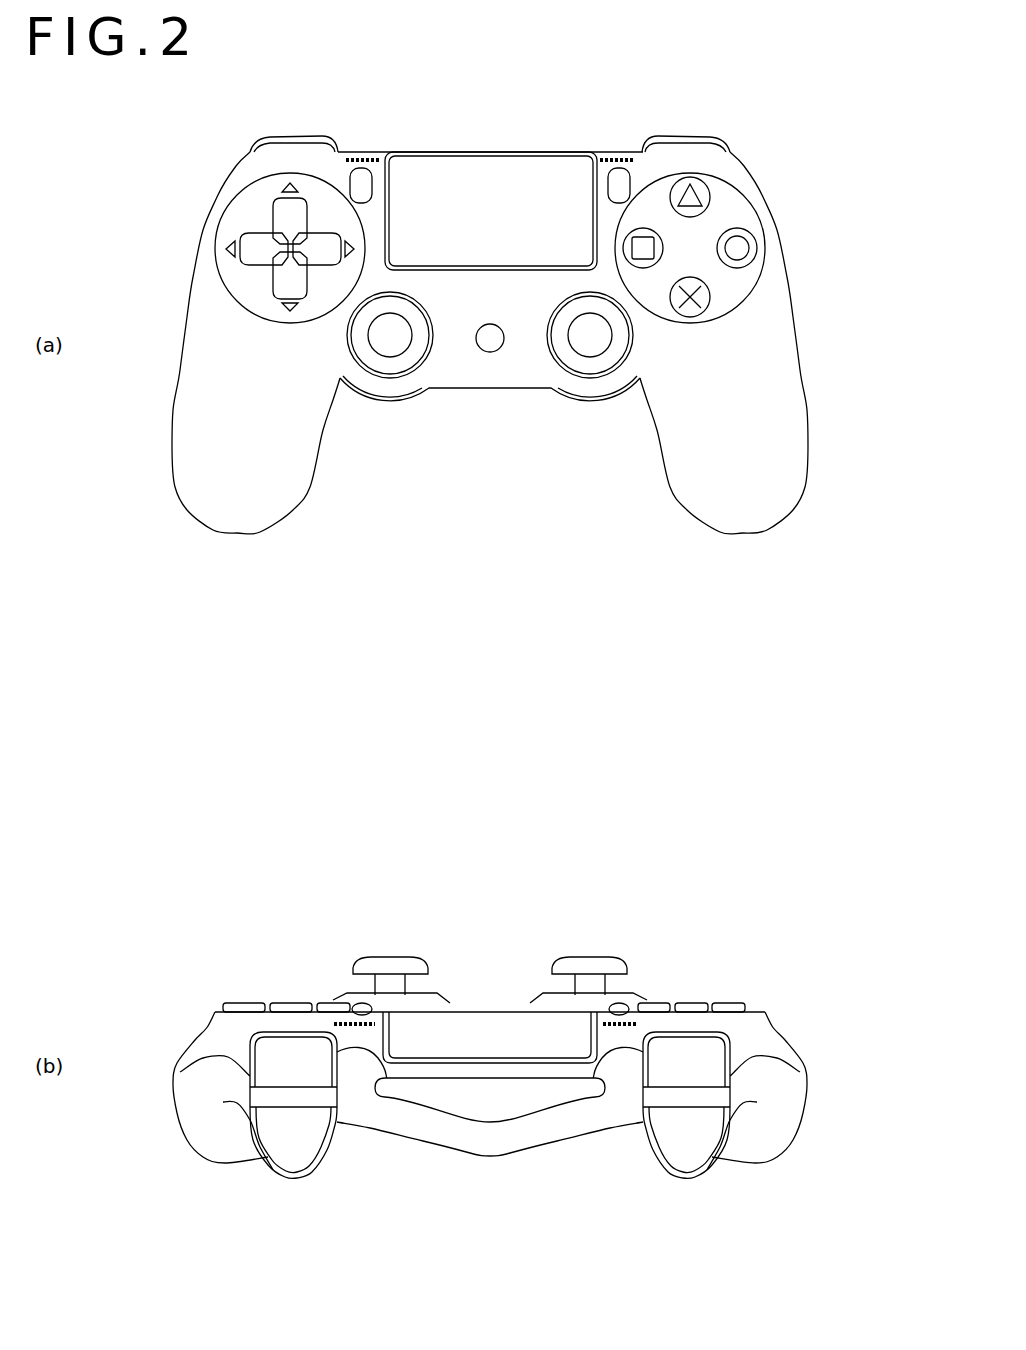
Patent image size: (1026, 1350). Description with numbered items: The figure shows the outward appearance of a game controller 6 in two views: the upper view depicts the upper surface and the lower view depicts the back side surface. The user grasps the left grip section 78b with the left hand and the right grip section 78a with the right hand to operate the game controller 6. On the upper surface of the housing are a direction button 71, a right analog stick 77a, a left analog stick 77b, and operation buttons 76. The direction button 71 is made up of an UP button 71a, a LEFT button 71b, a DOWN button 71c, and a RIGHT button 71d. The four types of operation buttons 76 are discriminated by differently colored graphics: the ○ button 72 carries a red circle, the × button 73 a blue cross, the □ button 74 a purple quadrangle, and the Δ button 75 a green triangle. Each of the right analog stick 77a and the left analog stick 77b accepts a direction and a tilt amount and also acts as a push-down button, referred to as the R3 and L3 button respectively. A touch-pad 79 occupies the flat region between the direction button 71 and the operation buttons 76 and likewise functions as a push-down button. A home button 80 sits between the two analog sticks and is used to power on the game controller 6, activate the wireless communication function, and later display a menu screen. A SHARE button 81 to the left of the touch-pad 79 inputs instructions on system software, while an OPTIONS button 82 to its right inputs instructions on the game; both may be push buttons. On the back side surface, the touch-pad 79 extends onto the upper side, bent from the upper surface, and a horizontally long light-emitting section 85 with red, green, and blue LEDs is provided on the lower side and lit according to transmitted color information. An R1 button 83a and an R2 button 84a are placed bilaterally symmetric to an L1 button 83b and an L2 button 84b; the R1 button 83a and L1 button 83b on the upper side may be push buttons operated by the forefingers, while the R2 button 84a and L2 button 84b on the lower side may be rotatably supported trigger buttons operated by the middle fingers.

The game controller 6 is at (497, 637).
The direction button 71 is at (258, 197).
The UP button 71a is at (292, 225).
The LEFT button 71b is at (257, 250).
The DOWN button 71c is at (280, 283).
The RIGHT button 71d is at (323, 253).
The ○ button 72 is at (735, 267).
The × button 73 is at (692, 317).
The □ button 74 is at (641, 228).
The Δ button 75 is at (708, 188).
The operation buttons 76 is at (858, 123).
The right analog stick 77a is at (590, 340).
The left analog stick 77b is at (390, 340).
The right grip section 78a is at (740, 520).
The left grip section 78b is at (240, 520).
The touch-pad 79 is at (492, 165).
The home button 80 is at (490, 347).
The SHARE button 81 is at (400, 165).
The OPTIONS button 82 is at (585, 165).
The R1 button 83a is at (280, 1065).
The L1 button 83b is at (700, 1065).
The R2 button 84a is at (290, 1122).
The L2 button 84b is at (690, 1122).
The light-emitting section 85 is at (527, 1097).